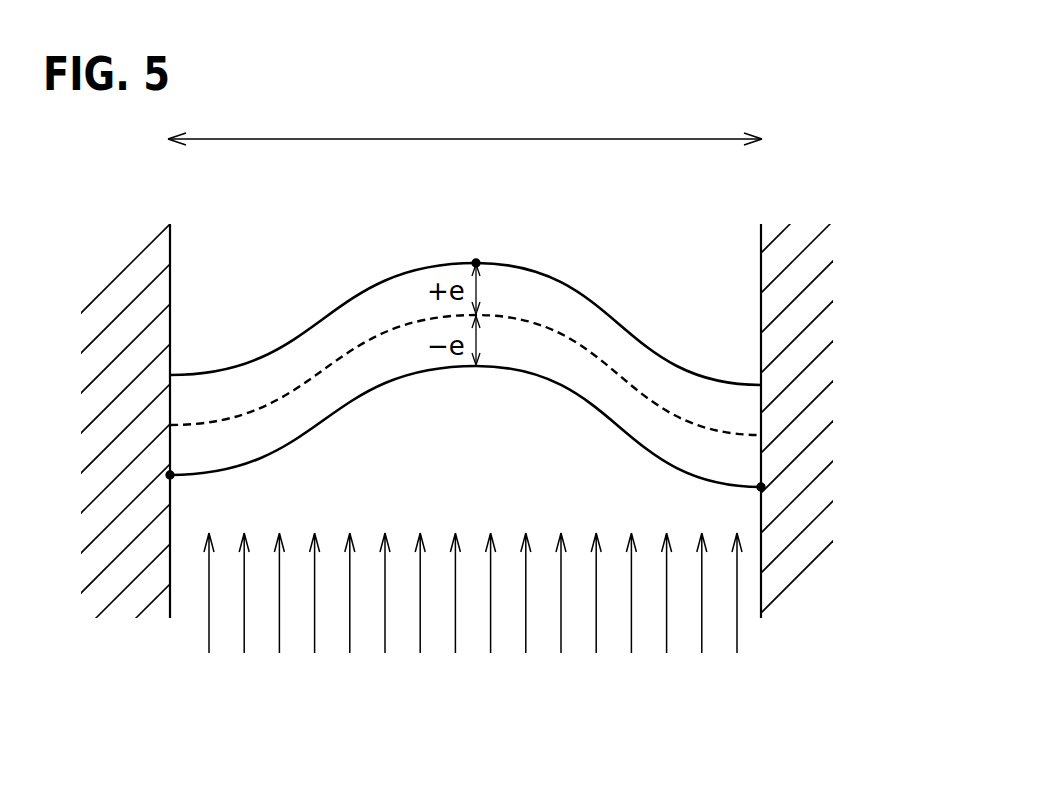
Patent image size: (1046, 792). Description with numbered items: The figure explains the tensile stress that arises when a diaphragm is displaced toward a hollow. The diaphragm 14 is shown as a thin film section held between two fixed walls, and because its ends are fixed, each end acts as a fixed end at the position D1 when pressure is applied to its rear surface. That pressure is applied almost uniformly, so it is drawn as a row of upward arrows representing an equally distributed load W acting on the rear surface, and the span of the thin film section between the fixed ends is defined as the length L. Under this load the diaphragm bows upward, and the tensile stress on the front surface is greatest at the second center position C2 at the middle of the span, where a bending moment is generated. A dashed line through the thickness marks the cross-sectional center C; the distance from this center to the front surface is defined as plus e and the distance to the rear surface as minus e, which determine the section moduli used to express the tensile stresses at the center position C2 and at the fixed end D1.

The plate member 14 is at (732, 462).
The fixed end position D1 is at (465, 495).
The second center position C2 is at (476, 246).
The cross-sectional center C is at (548, 326).
The length of the thin film section L is at (465, 122).
The equally distributed load W is at (473, 611).